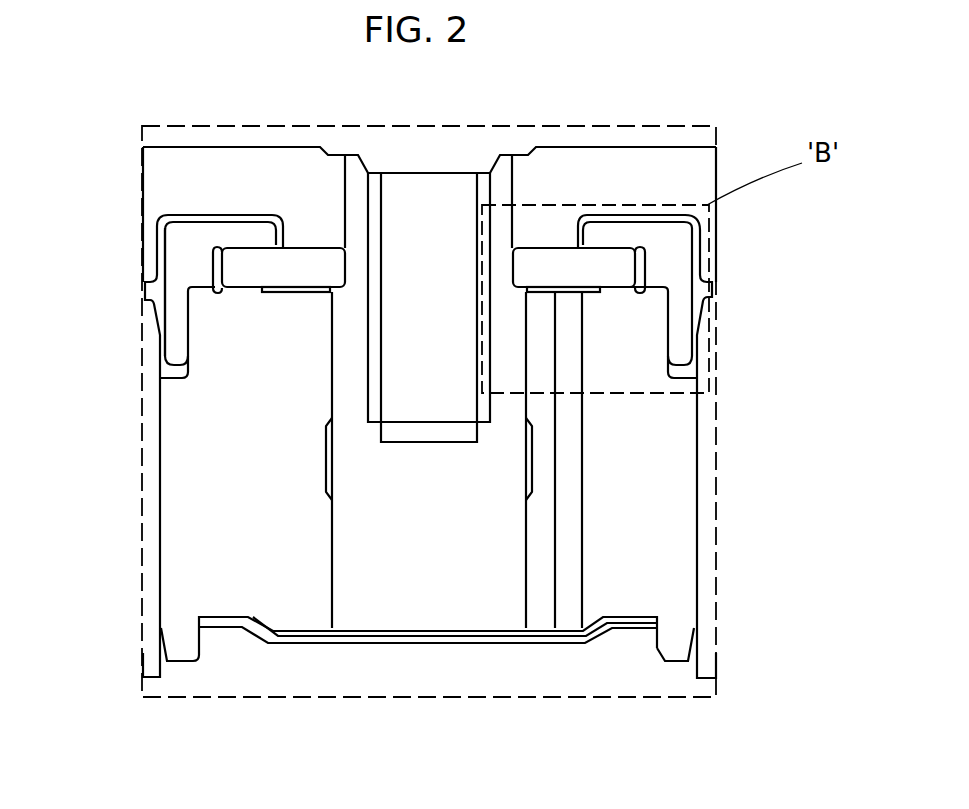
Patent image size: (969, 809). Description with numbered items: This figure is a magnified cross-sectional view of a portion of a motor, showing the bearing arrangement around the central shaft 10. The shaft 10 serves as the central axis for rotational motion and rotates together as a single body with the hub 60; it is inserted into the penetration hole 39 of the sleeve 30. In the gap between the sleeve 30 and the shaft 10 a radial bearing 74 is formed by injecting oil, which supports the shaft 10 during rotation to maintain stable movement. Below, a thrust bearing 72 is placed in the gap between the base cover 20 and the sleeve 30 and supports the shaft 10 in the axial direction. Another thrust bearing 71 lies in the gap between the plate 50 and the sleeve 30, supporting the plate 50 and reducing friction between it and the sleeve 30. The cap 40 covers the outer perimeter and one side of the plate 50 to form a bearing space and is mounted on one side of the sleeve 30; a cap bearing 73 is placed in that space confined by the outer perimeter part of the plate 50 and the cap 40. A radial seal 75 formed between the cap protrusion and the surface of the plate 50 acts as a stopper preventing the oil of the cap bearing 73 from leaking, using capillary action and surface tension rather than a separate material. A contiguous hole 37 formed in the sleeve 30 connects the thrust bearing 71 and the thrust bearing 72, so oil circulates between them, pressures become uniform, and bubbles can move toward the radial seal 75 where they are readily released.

The shaft 10 is at (415, 607).
The base cover 20 is at (562, 644).
The sleeve 30 is at (678, 490).
The contiguous hole 37 is at (575, 571).
The penetration hole 39 is at (326, 568).
The cap 40 is at (177, 243).
The plate 50 is at (242, 272).
The hub 60 is at (642, 157).
The thrust bearing 71 is at (549, 287).
The thrust bearing 72 is at (492, 636).
The cap bearing 73 is at (643, 262).
The radial bearing 74 is at (532, 447).
The radial seal 75 is at (269, 247).